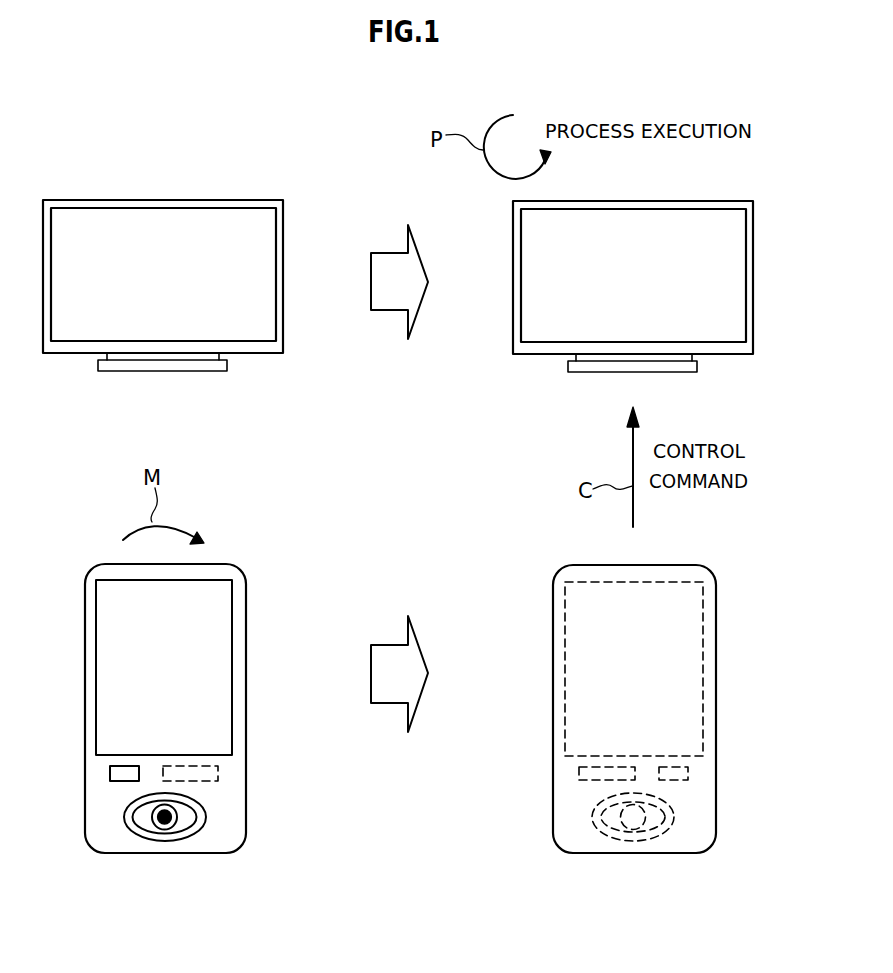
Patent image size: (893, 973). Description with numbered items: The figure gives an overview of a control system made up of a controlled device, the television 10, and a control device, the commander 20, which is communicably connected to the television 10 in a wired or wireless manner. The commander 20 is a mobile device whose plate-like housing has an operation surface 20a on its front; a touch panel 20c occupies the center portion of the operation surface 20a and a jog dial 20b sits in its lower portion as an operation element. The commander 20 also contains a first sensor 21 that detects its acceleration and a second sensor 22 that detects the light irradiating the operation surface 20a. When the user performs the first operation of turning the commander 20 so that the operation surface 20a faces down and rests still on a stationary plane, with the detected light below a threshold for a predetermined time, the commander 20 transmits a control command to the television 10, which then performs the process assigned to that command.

The television 10 is at (210, 200).
The commander 20 is at (217, 564).
The operation surface 20a is at (238, 758).
The jog dial 20b is at (177, 816).
The touch panel 20c is at (233, 643).
The first sensor 21 is at (218, 773).
The second sensor 22 is at (110, 773).